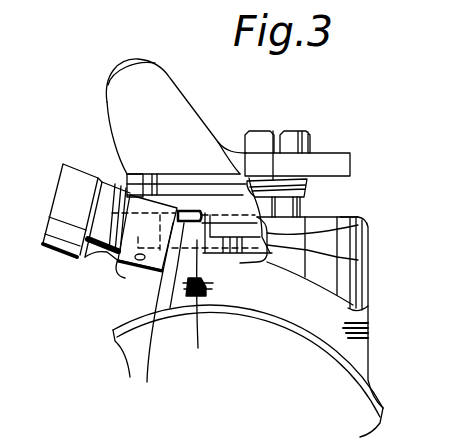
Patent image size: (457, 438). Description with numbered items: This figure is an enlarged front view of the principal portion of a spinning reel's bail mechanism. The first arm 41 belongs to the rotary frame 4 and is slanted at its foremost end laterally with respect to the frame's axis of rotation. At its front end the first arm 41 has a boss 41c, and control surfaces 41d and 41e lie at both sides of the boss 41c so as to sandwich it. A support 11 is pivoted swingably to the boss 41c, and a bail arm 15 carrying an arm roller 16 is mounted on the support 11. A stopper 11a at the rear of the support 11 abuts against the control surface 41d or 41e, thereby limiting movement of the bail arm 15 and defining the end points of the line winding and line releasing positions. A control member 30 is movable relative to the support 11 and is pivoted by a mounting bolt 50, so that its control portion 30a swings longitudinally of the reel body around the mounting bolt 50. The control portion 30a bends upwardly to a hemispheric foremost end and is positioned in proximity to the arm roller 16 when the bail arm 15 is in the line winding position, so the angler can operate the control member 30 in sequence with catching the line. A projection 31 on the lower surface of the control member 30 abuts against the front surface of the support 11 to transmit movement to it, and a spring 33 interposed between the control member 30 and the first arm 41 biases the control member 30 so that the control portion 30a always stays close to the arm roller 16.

The rotary frame 4 is at (386, 408).
The support 11 is at (58, 201).
The stopper 11a is at (362, 221).
The bail arm 15 is at (155, 320).
The arm roller 16 is at (100, 252).
The control member 30 is at (178, 100).
The control portion 30a is at (150, 82).
The projection 31 is at (130, 186).
The spring 33 is at (310, 189).
The first arm 41 is at (218, 255).
The boss 41c is at (198, 313).
The control surface 41d is at (358, 260).
The control surface 41e is at (105, 253).
The mounting bolt 50 is at (297, 131).